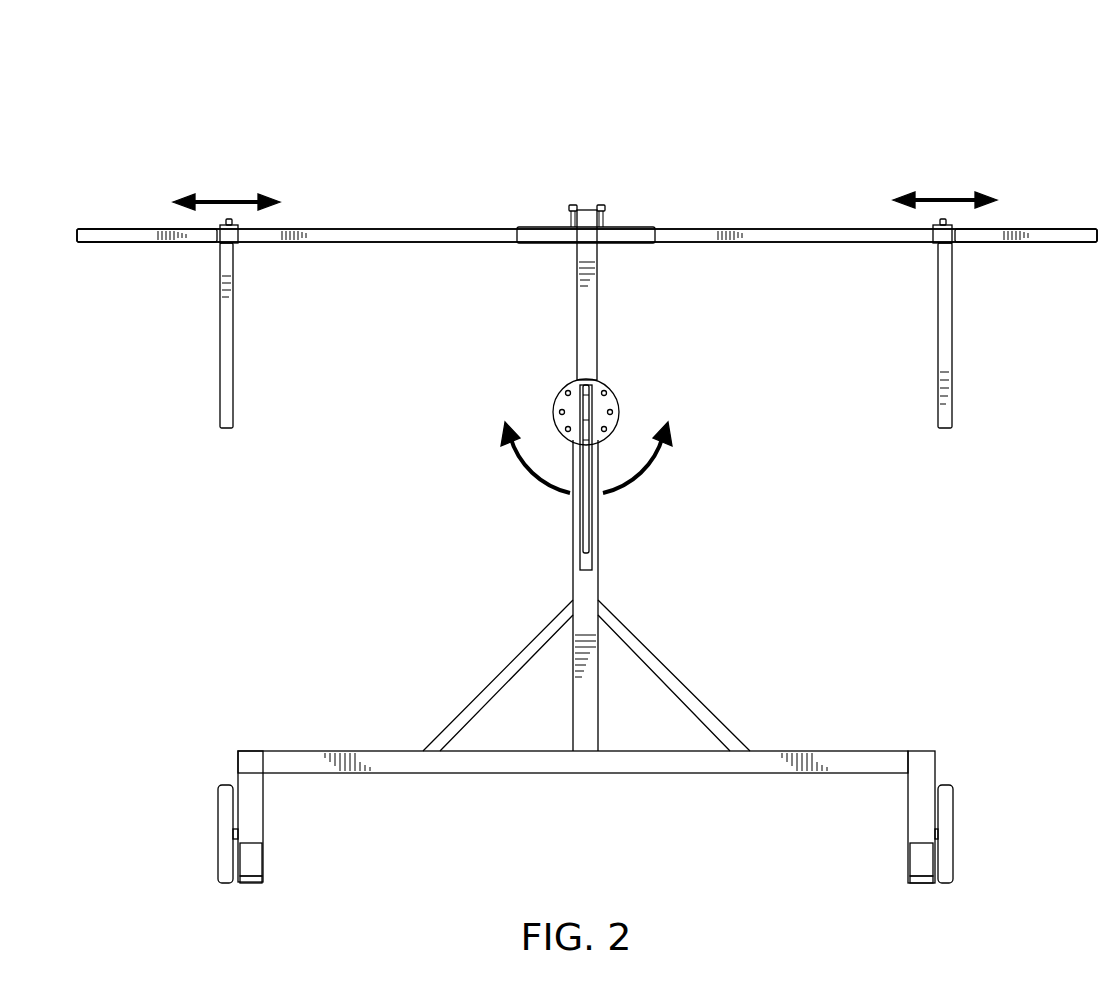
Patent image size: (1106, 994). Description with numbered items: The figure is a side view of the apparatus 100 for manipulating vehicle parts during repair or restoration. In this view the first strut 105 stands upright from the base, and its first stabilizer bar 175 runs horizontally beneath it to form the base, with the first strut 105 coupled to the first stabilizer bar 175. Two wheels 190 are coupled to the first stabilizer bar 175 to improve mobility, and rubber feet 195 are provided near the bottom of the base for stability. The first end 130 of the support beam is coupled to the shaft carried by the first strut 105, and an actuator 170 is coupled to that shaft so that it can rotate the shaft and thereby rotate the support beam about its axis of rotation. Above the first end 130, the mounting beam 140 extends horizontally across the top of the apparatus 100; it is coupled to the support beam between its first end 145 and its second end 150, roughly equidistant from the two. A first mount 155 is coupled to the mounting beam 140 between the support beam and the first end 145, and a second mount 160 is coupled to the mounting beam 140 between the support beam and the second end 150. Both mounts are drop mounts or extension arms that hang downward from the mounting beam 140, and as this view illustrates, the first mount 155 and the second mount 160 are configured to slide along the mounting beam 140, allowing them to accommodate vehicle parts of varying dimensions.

The apparatus 100 is at (445, 98).
The first strut 105 is at (583, 712).
The first end 130 is at (576, 315).
The mounting beam 140 is at (390, 228).
The first end 145 is at (1072, 228).
The second end 150 is at (100, 228).
The first mount 155 is at (953, 330).
The second mount 160 is at (218, 328).
The actuator 170 is at (523, 390).
The first stabilizer bar 175 is at (675, 765).
The wheels 190 is at (216, 835).
The rubber feet 195 is at (250, 888).